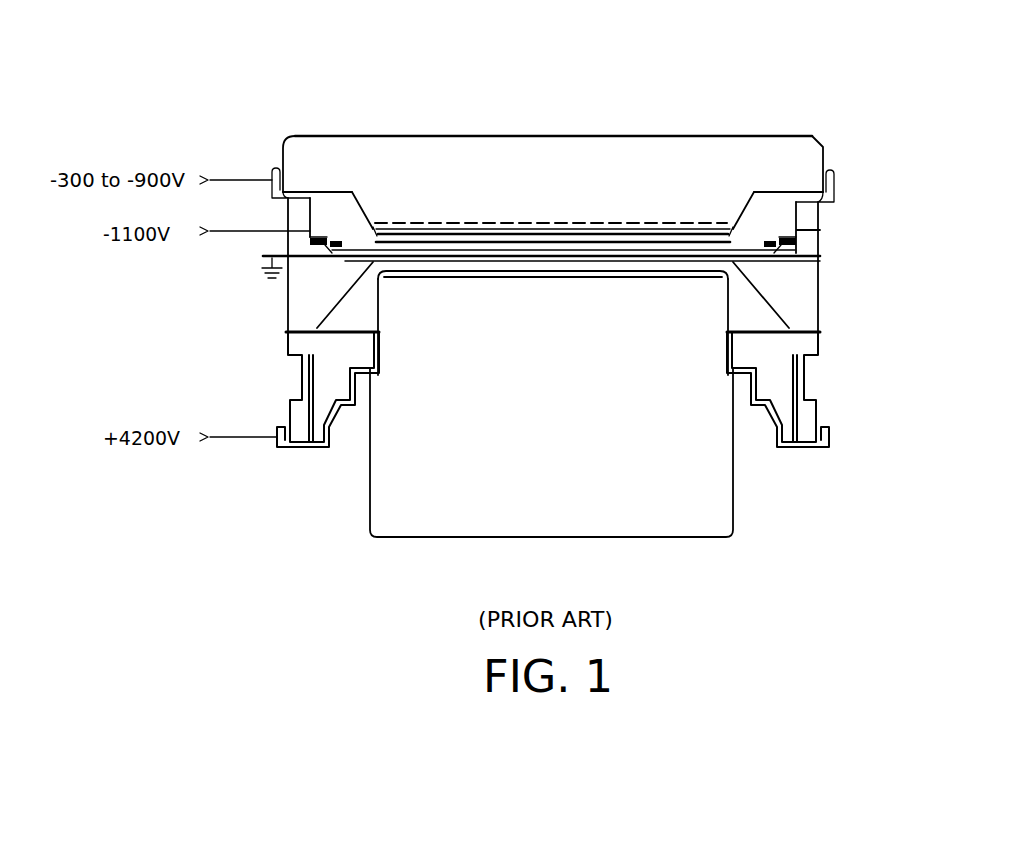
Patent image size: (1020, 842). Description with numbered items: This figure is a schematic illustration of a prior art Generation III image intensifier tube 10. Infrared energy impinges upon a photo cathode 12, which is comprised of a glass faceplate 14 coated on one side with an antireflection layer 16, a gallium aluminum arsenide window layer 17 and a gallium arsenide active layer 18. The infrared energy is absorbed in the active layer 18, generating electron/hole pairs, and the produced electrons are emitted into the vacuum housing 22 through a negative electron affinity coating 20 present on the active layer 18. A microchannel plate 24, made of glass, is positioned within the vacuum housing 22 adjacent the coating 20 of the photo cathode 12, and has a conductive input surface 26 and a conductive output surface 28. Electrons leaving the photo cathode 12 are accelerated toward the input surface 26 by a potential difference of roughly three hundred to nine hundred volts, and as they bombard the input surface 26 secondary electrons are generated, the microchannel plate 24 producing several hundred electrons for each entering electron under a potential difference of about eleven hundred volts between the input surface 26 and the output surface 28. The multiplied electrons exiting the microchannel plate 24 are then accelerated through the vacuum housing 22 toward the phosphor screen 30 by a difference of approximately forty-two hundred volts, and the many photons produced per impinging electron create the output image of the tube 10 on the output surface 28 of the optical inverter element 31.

The image intensifier tube 10 is at (708, 60).
The photo cathode 12 is at (592, 132).
The glass faceplate 14 is at (693, 152).
The antireflection layer 16 is at (710, 227).
The gallium aluminum arsenide window layer 17 is at (502, 230).
The gallium arsenide active layer 18 is at (432, 230).
The negative electron affinity coating 20 is at (555, 238).
The vacuum housing 22 is at (823, 290).
The microchannel plate 24 is at (765, 246).
The input surface 26 is at (613, 244).
The output surface 28 is at (693, 262).
The phosphor screen 30 is at (468, 271).
The optical inverter element 31 is at (718, 498).